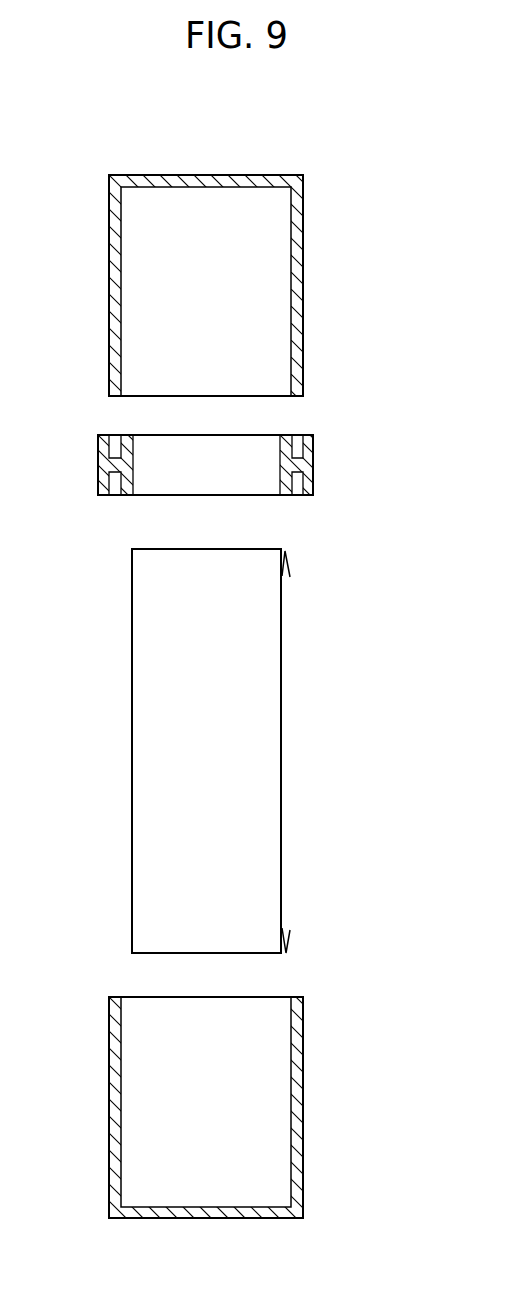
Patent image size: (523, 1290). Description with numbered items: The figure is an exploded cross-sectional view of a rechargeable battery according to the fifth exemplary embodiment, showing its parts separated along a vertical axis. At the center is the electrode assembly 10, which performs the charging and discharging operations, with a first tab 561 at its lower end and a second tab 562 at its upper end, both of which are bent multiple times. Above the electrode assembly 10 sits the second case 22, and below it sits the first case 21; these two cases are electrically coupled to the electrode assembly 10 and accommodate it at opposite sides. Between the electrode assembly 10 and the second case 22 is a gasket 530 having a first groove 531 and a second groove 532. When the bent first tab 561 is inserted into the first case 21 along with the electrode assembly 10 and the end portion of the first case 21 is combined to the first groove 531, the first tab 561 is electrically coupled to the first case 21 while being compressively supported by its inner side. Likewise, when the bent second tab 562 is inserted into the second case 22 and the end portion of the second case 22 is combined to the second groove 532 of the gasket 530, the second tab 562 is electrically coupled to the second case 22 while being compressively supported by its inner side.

The electrode assembly 10 is at (205, 750).
The first case 21 is at (303, 1097).
The second case 22 is at (303, 272).
The gasket 530 is at (216, 463).
The first groove 531 is at (298, 493).
The second groove 532 is at (298, 437).
The first tab 561 is at (292, 932).
The second tab 562 is at (290, 565).